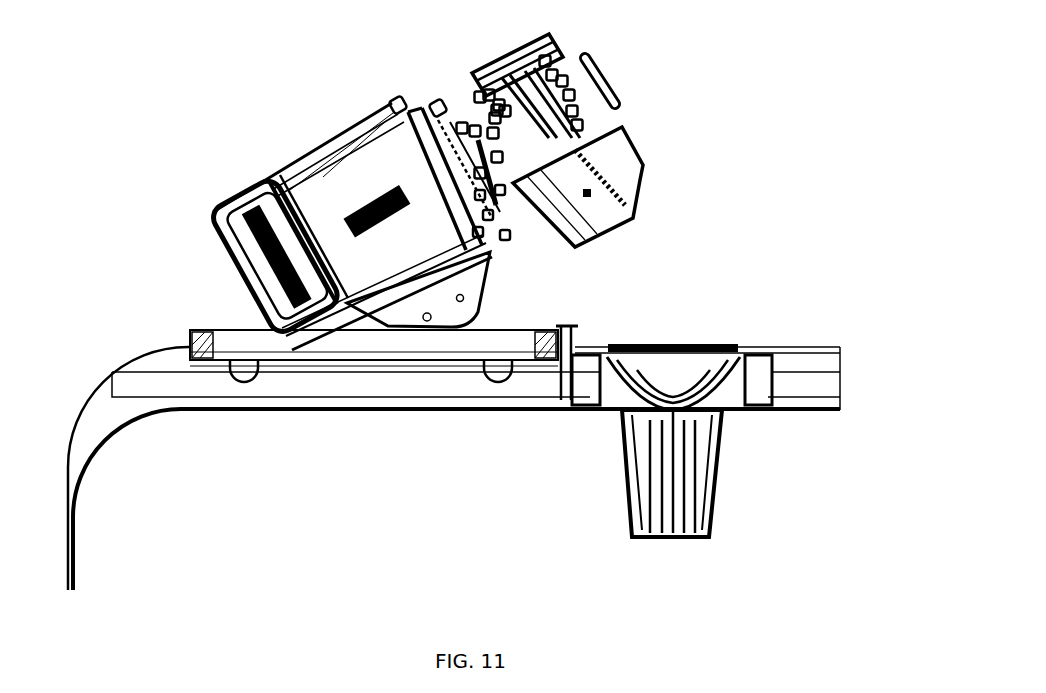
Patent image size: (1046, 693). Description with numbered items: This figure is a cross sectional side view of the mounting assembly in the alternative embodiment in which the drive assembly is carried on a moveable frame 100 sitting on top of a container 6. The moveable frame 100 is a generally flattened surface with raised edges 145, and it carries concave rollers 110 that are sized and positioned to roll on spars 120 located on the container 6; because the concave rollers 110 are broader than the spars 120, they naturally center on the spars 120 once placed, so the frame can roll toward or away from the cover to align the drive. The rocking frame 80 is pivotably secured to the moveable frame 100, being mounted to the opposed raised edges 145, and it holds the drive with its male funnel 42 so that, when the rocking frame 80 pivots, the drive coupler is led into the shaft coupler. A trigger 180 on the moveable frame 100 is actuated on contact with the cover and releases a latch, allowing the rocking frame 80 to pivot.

The container 6 is at (197, 404).
The male funnel 42 is at (641, 190).
The rocking frame 80 is at (453, 291).
The moveable frame 100 is at (232, 335).
The concave rollers 110 is at (505, 368).
The spars 120 is at (385, 385).
The raised edges 145 is at (333, 352).
The trigger 180 is at (568, 337).